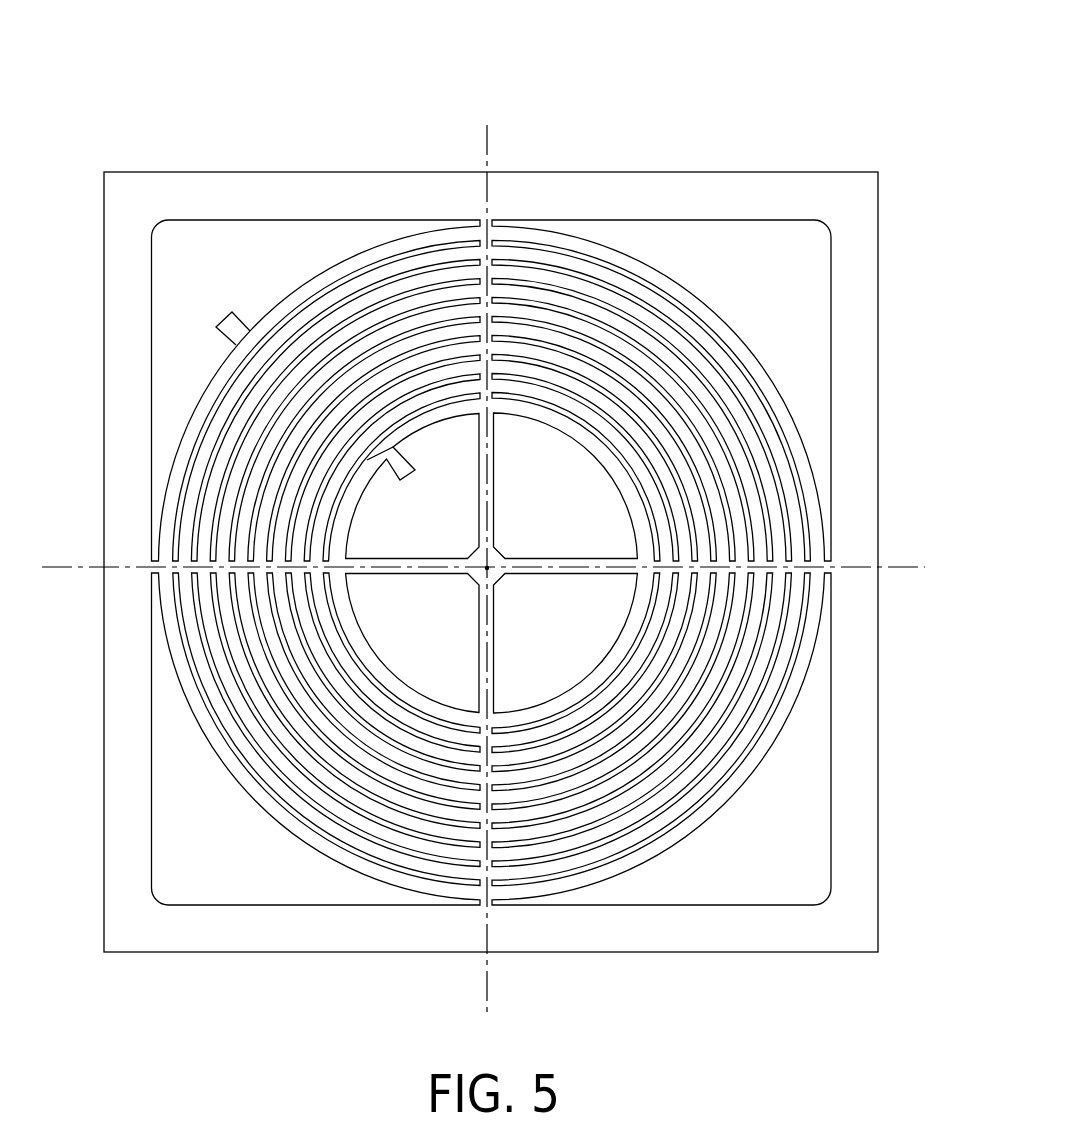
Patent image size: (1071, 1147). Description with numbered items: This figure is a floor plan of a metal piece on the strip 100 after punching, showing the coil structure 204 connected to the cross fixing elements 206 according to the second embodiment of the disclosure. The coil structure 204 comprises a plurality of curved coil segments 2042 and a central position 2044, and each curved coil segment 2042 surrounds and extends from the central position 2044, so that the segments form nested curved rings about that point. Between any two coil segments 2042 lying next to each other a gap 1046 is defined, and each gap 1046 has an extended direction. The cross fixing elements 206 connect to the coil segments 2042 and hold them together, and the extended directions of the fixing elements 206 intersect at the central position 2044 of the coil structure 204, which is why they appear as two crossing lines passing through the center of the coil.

The strip 100 is at (712, 36).
The gap 1046 is at (596, 262).
The coil structure 204 is at (658, 270).
The cross fixing elements 206 is at (566, 561).
The curved coil segment 2042 is at (349, 525).
The central position 2044 is at (488, 568).